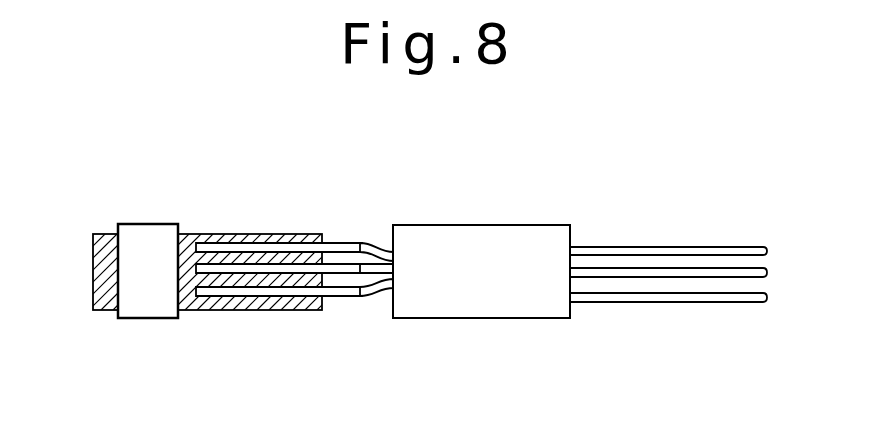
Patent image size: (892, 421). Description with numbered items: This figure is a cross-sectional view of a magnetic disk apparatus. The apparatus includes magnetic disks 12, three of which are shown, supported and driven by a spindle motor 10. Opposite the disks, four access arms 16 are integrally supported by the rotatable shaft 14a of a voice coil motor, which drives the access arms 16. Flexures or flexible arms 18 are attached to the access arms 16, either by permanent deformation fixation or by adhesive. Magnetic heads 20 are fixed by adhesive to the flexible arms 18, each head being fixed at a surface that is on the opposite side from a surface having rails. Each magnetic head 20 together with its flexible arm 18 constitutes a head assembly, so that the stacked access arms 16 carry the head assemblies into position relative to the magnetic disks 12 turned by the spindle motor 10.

The spindle motor 10 is at (488, 300).
The magnetic disks 12 is at (685, 295).
The rotatable shaft 14a is at (142, 307).
The access arms 16 is at (232, 248).
The flexible arms 18 is at (347, 249).
The magnetic heads 20 is at (390, 249).